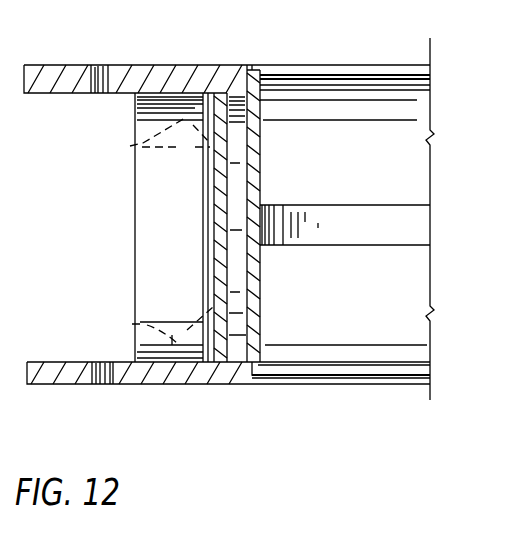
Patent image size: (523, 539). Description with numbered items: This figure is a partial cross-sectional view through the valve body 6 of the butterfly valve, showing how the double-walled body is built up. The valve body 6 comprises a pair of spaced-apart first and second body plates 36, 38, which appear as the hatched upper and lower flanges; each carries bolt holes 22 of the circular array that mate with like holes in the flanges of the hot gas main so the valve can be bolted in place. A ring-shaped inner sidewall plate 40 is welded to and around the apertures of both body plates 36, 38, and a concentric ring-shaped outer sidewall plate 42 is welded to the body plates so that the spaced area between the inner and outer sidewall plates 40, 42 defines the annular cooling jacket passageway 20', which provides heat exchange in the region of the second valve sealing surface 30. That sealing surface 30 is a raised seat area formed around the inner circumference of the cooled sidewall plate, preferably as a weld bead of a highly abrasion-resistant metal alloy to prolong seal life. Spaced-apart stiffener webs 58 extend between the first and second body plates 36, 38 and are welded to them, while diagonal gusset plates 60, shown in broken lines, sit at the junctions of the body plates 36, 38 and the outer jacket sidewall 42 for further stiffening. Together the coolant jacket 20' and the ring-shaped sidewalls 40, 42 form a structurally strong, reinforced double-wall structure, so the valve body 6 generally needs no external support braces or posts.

The valve body 6 is at (66, 54).
The fluid jacket 20' is at (260, 189).
The bolt holes 22 is at (106, 66).
The second valve sealing surface 30 is at (327, 204).
The first body plate 36 is at (178, 65).
The second body plate 38 is at (63, 385).
The inner sidewall plate 40 is at (260, 163).
The outer sidewall plate 42 is at (210, 282).
The stiffener webs 58 is at (135, 244).
The diagonal gusset plates 60 is at (118, 148).